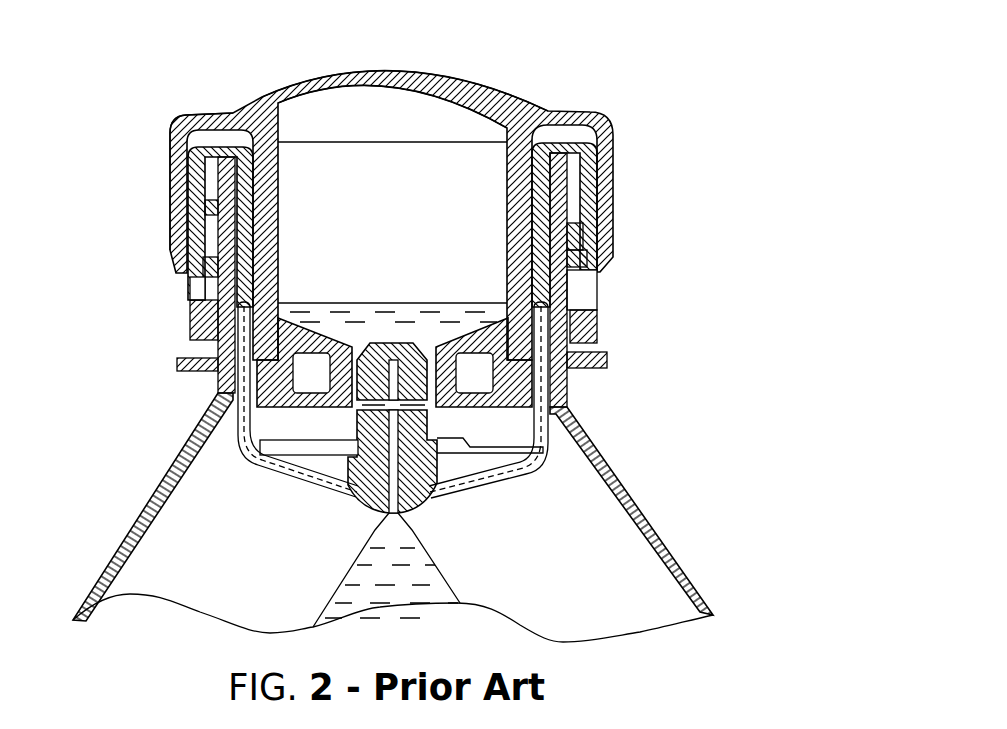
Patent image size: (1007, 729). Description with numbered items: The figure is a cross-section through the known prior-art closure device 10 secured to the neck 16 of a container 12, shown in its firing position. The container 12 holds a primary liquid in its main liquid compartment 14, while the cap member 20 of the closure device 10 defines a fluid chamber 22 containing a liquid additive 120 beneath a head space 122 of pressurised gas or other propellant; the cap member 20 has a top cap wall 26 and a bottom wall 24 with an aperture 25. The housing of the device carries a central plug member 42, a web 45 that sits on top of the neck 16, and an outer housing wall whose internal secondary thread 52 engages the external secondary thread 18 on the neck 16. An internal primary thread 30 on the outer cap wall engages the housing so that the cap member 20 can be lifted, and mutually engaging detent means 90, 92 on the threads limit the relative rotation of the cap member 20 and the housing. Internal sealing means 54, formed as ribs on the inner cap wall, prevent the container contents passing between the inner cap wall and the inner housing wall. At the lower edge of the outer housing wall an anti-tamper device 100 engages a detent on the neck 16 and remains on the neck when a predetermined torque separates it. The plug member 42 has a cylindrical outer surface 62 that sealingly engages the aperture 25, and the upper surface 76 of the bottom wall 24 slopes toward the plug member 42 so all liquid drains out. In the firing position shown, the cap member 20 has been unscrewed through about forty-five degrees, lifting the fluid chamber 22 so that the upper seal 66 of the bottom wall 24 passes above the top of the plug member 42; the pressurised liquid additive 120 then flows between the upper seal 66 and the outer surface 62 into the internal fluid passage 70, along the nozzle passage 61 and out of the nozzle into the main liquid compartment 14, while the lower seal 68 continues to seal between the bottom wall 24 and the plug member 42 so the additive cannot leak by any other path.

The closure device 10 is at (646, 24).
The container 12 is at (150, 520).
The main liquid compartment 14 is at (210, 585).
The neck 16 is at (215, 375).
The external secondary thread 18 is at (583, 188).
The cap member 20 is at (562, 88).
The fluid chamber 22 is at (453, 155).
The bottom wall 24 is at (520, 410).
The aperture 25 is at (476, 415).
The top cap wall 26 is at (272, 102).
The internal primary thread 30 is at (595, 246).
The plug member 42 is at (360, 495).
The web 45 is at (213, 140).
The internal secondary thread 52 is at (197, 278).
The internal sealing means 54 is at (257, 228).
The nozzle passage 61 is at (372, 542).
The cylindrical outer surface 62 is at (353, 370).
The upper seal 66 is at (433, 372).
The lower seal 68 is at (236, 436).
The internal fluid passage 70 is at (443, 432).
The upper surface 76 is at (300, 324).
The detent means 90 is at (598, 262).
The detent means 92 is at (598, 270).
The anti-tamper device 100 is at (597, 326).
The liquid additive 120 is at (460, 312).
The head space 122 is at (436, 230).